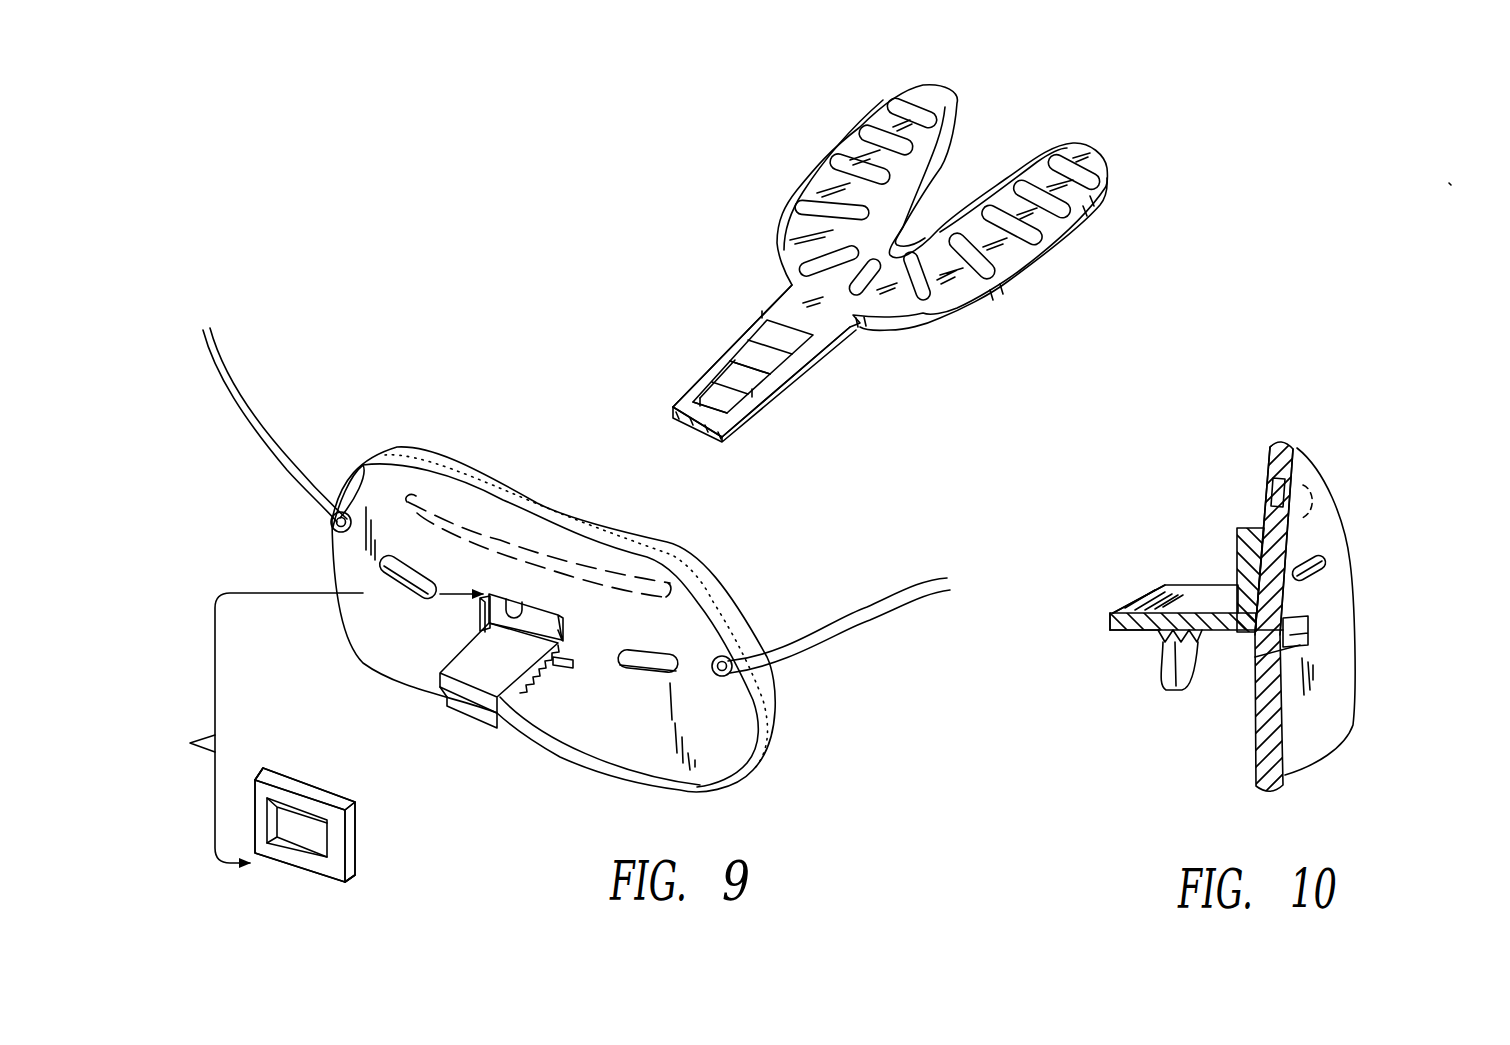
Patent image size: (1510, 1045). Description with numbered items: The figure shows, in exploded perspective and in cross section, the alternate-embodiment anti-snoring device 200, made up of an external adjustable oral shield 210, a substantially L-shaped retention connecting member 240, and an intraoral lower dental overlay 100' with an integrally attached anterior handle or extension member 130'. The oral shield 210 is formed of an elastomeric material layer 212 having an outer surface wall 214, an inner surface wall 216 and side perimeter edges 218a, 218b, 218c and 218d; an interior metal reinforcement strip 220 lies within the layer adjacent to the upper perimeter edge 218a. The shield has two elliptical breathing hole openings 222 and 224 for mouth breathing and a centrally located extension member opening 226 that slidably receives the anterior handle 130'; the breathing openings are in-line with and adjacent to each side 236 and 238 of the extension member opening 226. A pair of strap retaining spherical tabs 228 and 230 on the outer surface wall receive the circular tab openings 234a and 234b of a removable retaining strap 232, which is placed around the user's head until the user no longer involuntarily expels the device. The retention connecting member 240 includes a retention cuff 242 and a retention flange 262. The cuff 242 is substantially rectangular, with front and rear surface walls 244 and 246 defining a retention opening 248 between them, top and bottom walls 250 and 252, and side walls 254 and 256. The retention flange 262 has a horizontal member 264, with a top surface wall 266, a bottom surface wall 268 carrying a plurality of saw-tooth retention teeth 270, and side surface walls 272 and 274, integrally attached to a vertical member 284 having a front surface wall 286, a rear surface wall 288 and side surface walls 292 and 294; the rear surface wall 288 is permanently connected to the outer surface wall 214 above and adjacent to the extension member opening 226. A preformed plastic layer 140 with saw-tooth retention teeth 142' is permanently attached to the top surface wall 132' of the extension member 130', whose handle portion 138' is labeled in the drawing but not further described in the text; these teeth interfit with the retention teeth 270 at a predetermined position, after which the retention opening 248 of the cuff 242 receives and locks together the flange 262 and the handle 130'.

In FIG. 9, the intraoral lower dental overlay 100' is at (890, 243).
In FIG. 9, the anterior handle or extension member 130' is at (657, 435).
In FIG. 9, the surface wall of extension member 132' is at (671, 373).
In FIG. 9, the strap opening 138' is at (656, 413).
In FIG. 9, the preformed plastic layer 140 is at (778, 366).
In FIG. 9, the saw-tooth retention teeth 142' is at (704, 353).
In FIG. 9, the anti-snoring device 200 is at (482, 395).
In FIG. 10, the anti-snoring device 200 is at (1402, 495).
In FIG. 9, the oral shield 210 is at (497, 480).
In FIG. 10, the oral shield 210 is at (1355, 516).
In FIG. 9, the elastomeric material layer 212 is at (352, 607).
In FIG. 10, the elastomeric material layer 212 is at (1258, 768).
In FIG. 9, the outer surface wall 214 is at (725, 640).
In FIG. 10, the outer surface wall 214 is at (1268, 505).
In FIG. 9, the inner surface wall 216 is at (520, 493).
In FIG. 10, the inner surface wall 216 is at (1315, 702).
In FIG. 9, the upper perimeter edge 218a is at (643, 543).
In FIG. 10, the upper perimeter edge 218a is at (1300, 472).
In FIG. 9, the side perimeter edge 218b is at (553, 757).
In FIG. 10, the side perimeter edge 218b is at (1283, 771).
In FIG. 9, the side perimeter edge 218c is at (330, 560).
In FIG. 10, the side perimeter edge 218c is at (1355, 616).
In FIG. 9, the side perimeter edge 218d is at (782, 682).
In FIG. 9, the interior metal reinforcement strip 220 is at (413, 472).
In FIG. 10, the interior metal reinforcement strip 220 is at (1268, 478).
In FIG. 9, the breathing hole opening 222 is at (382, 564).
In FIG. 10, the breathing hole opening 222 is at (1325, 569).
In FIG. 9, the breathing hole opening 224 is at (650, 653).
In FIG. 9, the extension member opening 226 is at (462, 622).
In FIG. 10, the extension member opening 226 is at (1276, 637).
In FIG. 9, the strap retaining spherical tab 228 is at (363, 464).
In FIG. 9, the strap retaining spherical tab 230 is at (720, 676).
In FIG. 9, the removable retaining strap 232 is at (262, 433).
In FIG. 9, the circular tab opening 234a is at (331, 521).
In FIG. 9, the circular tab opening 234b is at (732, 679).
In FIG. 9, the side of extension member opening 236 is at (477, 624).
In FIG. 10, the side of extension member opening 236 is at (1300, 635).
In FIG. 9, the side of extension member opening 238 is at (553, 667).
In FIG. 9, the retention connecting member 240 is at (255, 728).
In FIG. 9, the retention cuff 242 is at (340, 896).
In FIG. 9, the front surface wall 244 is at (327, 870).
In FIG. 9, the rear surface wall 246 is at (357, 811).
In FIG. 9, the retention opening 248 is at (310, 832).
In FIG. 9, the top wall 250 is at (335, 797).
In FIG. 9, the bottom wall 252 is at (350, 878).
In FIG. 9, the side wall 254 is at (255, 790).
In FIG. 9, the side wall 256 is at (350, 828).
In FIG. 9, the retention flange 262 is at (565, 662).
In FIG. 10, the retention flange 262 is at (1102, 622).
In FIG. 9, the horizontal member 264 is at (446, 701).
In FIG. 10, the horizontal member 264 is at (1163, 582).
In FIG. 9, the top surface wall 266 is at (445, 673).
In FIG. 10, the top surface wall 266 is at (1160, 602).
In FIG. 9, the bottom surface wall 268 is at (500, 712).
In FIG. 10, the bottom surface wall 268 is at (1133, 633).
In FIG. 9, the saw-tooth retention teeth 270 is at (563, 744).
In FIG. 10, the saw-tooth retention teeth 270 is at (1170, 688).
In FIG. 9, the side surface wall 272 is at (452, 656).
In FIG. 9, the side surface wall 274 is at (470, 712).
In FIG. 10, the side surface wall 274 is at (1112, 613).
In FIG. 9, the vertical member 284 is at (568, 627).
In FIG. 10, the vertical member 284 is at (1243, 523).
In FIG. 9, the front surface wall 286 is at (508, 595).
In FIG. 10, the front surface wall 286 is at (1236, 554).
In FIG. 9, the rear surface wall 288 is at (565, 615).
In FIG. 10, the rear surface wall 288 is at (1248, 530).
In FIG. 9, the side surface wall 292 is at (567, 590).
In FIG. 10, the side surface wall 292 is at (1253, 527).
In FIG. 9, the side surface wall 294 is at (565, 637).